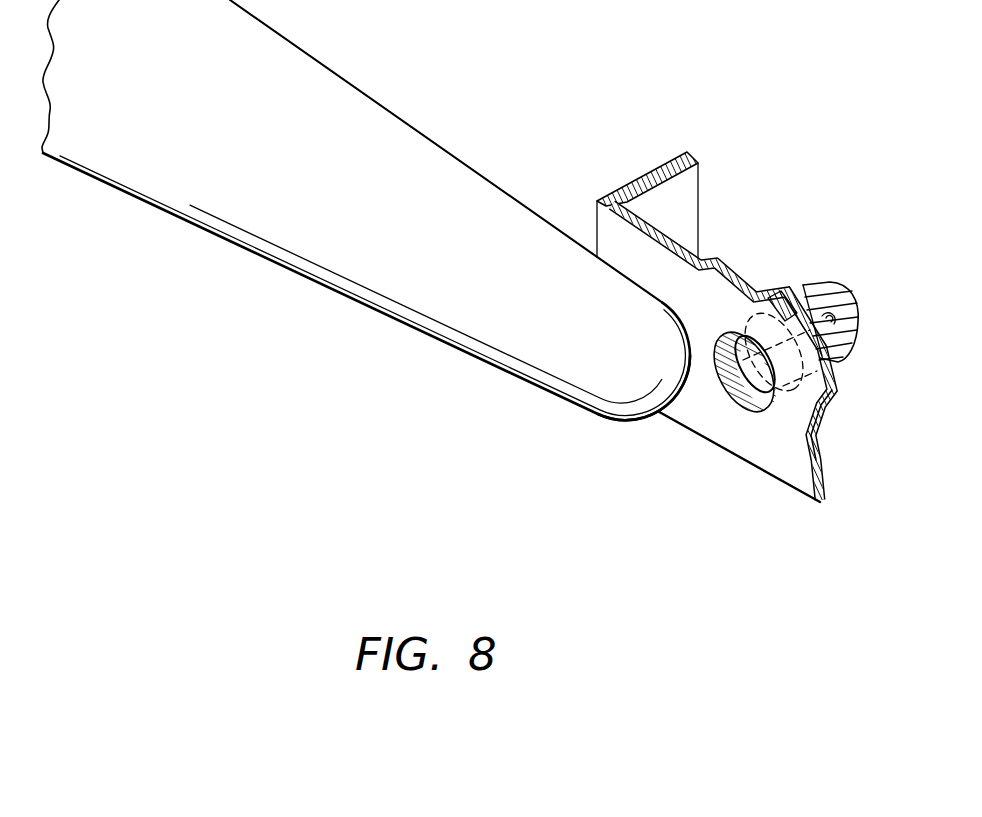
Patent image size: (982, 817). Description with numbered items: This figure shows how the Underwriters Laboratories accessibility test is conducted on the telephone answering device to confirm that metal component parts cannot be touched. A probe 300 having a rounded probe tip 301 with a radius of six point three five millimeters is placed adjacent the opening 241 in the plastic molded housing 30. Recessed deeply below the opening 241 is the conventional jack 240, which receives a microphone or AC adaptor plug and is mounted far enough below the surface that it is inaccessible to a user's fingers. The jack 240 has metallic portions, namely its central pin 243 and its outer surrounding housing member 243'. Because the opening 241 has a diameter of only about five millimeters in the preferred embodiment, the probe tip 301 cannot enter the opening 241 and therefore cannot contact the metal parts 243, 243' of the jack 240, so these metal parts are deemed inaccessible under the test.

The housing 30 is at (630, 176).
The jack 240 is at (831, 280).
The opening 241 is at (726, 405).
The central pin 243 is at (853, 422).
The outer surrounding housing member 243' is at (861, 285).
The probe 300 is at (432, 319).
The rounded probe tip 301 is at (633, 423).